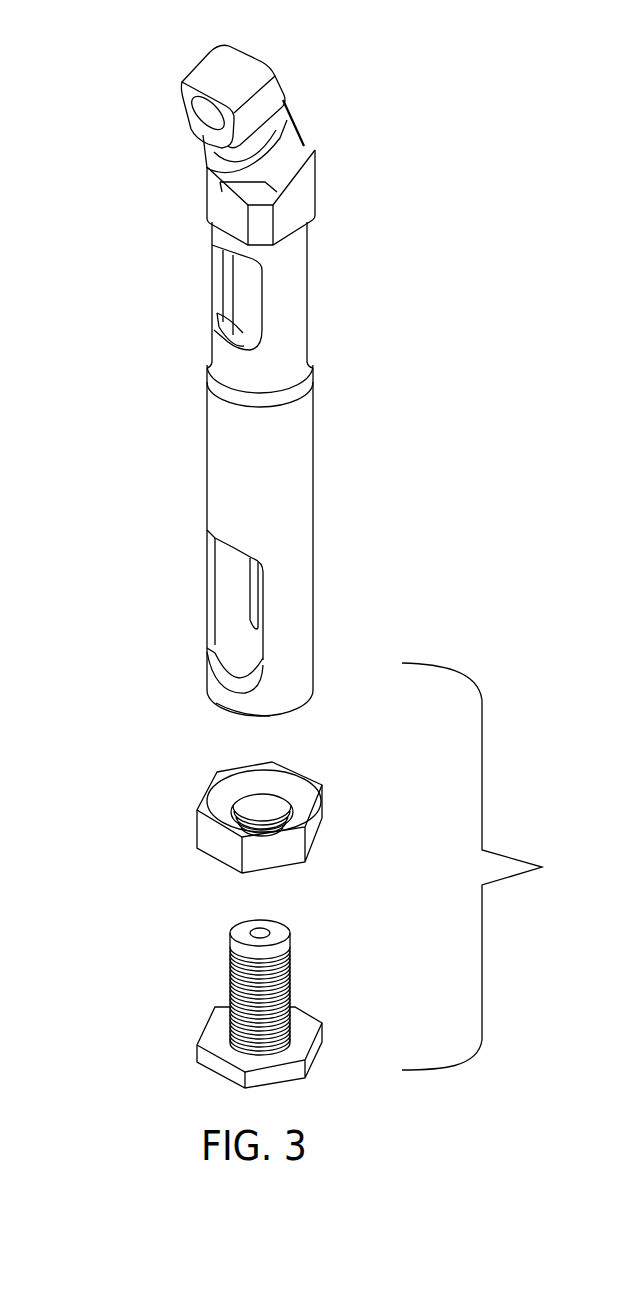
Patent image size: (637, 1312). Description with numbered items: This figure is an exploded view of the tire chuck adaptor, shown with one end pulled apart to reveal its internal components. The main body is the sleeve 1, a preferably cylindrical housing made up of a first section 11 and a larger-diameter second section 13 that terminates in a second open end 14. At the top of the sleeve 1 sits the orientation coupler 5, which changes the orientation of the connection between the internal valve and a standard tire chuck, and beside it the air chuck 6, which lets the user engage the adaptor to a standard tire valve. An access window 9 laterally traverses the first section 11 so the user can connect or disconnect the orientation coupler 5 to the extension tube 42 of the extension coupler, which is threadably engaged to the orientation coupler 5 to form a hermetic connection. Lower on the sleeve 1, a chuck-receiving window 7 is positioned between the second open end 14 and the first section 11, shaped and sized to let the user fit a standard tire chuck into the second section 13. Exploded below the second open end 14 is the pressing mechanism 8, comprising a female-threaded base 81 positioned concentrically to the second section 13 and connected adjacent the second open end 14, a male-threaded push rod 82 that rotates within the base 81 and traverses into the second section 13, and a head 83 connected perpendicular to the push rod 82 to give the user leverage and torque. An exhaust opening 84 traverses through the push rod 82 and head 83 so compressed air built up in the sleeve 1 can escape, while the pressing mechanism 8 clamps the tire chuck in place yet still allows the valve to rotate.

The sleeve 1 is at (289, 473).
The orientation coupler 5 is at (336, 171).
The air chuck 6 is at (176, 60).
The chuck-receiving window 7 is at (221, 602).
The pressing mechanism 8 is at (301, 875).
The access window 9 is at (221, 270).
The first section 11 is at (227, 295).
The second section 13 is at (217, 545).
The second open end 14 is at (221, 714).
The extension tube 42 is at (243, 326).
The female-threaded base 81 is at (310, 825).
The male-threaded push rod 82 is at (239, 964).
The head 83 is at (315, 1055).
The exhaust opening 84 is at (262, 924).